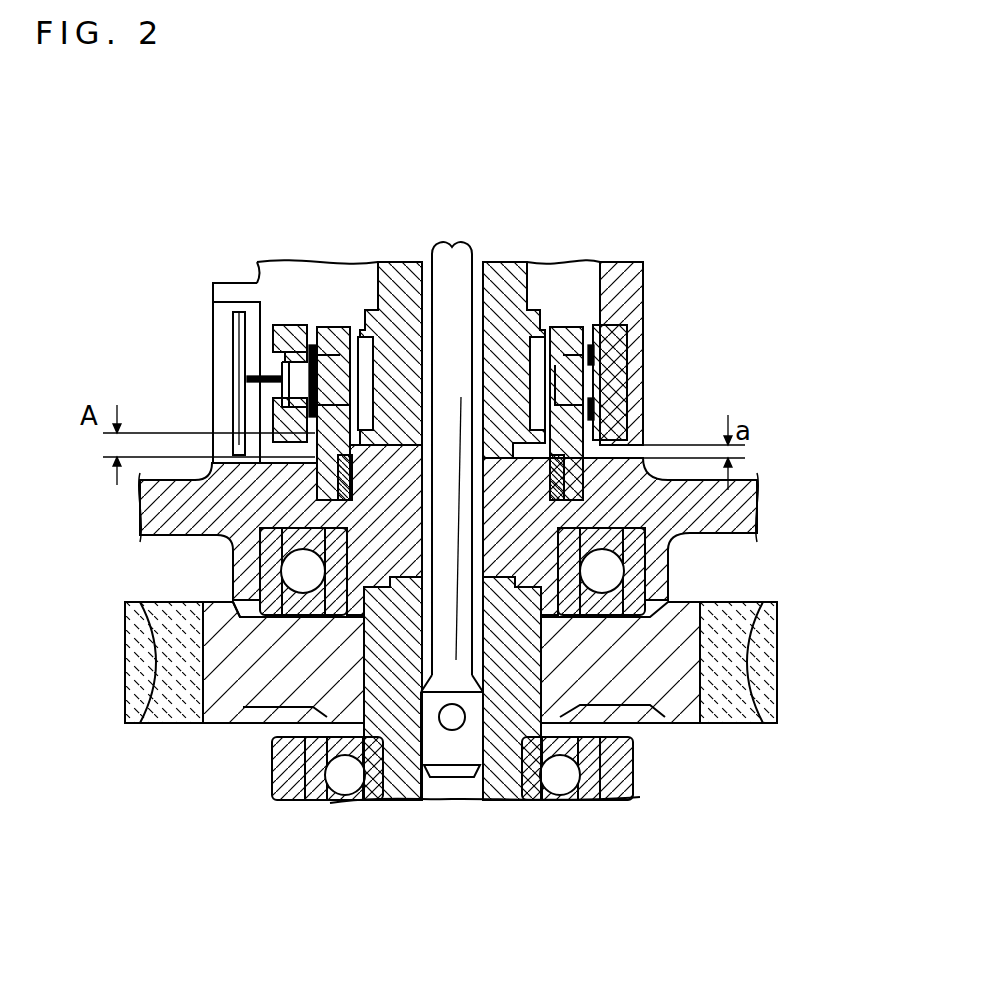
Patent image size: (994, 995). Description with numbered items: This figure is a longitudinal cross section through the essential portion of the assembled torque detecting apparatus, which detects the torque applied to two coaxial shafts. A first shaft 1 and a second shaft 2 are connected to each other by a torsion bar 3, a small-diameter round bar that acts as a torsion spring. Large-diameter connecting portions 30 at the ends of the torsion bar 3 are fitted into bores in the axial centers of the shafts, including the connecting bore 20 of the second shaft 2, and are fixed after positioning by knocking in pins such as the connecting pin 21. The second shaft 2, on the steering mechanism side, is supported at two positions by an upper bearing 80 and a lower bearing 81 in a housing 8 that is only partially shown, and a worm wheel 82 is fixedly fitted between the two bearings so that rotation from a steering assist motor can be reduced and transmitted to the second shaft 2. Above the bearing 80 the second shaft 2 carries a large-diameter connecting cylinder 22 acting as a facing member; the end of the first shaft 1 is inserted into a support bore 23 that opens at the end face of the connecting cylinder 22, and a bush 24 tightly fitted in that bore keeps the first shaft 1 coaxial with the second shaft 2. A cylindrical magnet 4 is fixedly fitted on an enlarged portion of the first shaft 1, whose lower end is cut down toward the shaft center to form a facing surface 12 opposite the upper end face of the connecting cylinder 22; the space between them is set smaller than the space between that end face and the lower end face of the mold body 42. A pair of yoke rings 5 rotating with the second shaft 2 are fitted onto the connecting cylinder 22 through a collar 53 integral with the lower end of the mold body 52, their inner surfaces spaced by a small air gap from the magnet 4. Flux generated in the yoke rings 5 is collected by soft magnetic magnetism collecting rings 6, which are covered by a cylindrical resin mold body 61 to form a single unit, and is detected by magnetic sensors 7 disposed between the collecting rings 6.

The first shaft 1 is at (501, 272).
The second shaft 2 is at (503, 787).
The torsion bar 3 is at (440, 247).
The cylindrical magnet 4 is at (352, 337).
The yoke ring 5 is at (562, 340).
The magnetism collecting ring 6 is at (300, 342).
The magnetic sensor 7 is at (277, 372).
The housing 8 is at (638, 303).
The facing surface 12 is at (575, 497).
The connecting bore 20 is at (473, 795).
The connecting pin 21 is at (450, 722).
The connecting cylinder 22 is at (233, 537).
The support bore 23 is at (515, 570).
The bush 24 is at (300, 650).
The connecting portion 30 is at (423, 745).
The mold body 42 is at (380, 340).
The mold body 52 is at (572, 368).
The collar 53 is at (563, 500).
The mold body 61 is at (281, 325).
The bearing 80 is at (622, 562).
The bearing 81 is at (552, 790).
The worm wheel 82 is at (210, 718).